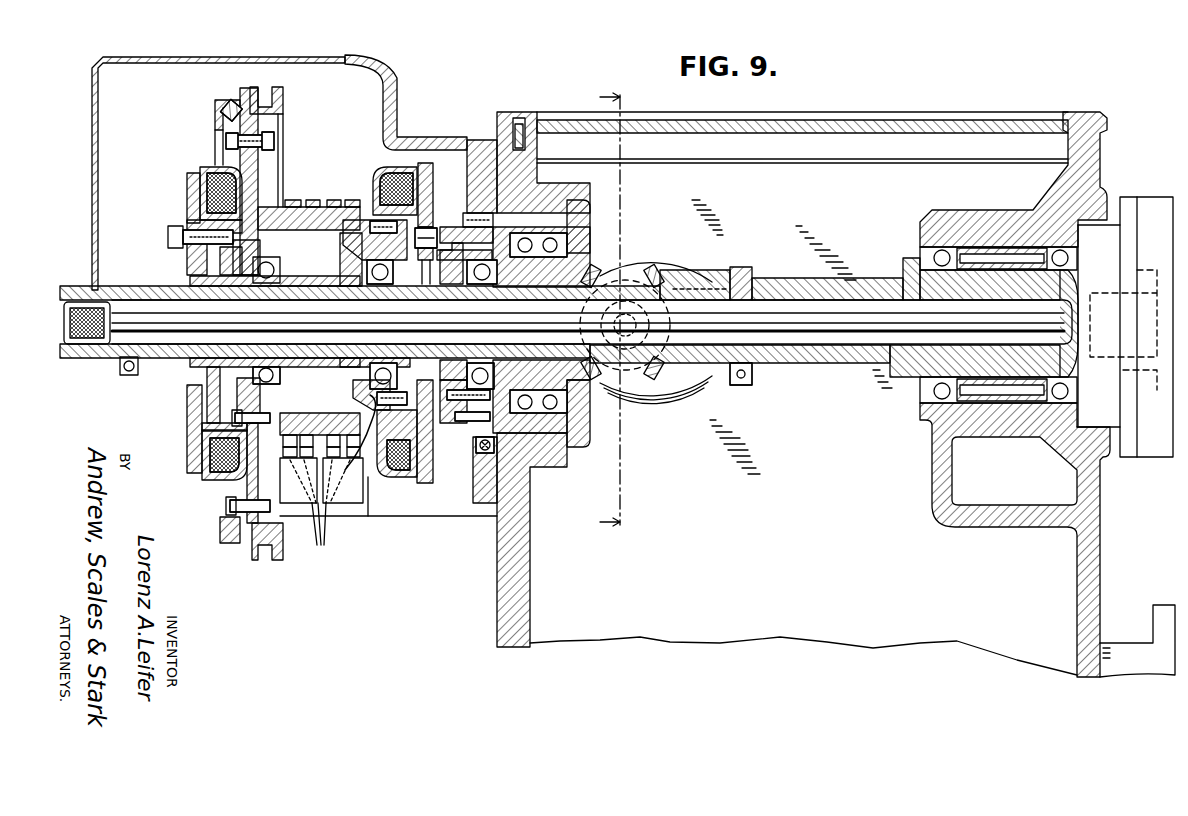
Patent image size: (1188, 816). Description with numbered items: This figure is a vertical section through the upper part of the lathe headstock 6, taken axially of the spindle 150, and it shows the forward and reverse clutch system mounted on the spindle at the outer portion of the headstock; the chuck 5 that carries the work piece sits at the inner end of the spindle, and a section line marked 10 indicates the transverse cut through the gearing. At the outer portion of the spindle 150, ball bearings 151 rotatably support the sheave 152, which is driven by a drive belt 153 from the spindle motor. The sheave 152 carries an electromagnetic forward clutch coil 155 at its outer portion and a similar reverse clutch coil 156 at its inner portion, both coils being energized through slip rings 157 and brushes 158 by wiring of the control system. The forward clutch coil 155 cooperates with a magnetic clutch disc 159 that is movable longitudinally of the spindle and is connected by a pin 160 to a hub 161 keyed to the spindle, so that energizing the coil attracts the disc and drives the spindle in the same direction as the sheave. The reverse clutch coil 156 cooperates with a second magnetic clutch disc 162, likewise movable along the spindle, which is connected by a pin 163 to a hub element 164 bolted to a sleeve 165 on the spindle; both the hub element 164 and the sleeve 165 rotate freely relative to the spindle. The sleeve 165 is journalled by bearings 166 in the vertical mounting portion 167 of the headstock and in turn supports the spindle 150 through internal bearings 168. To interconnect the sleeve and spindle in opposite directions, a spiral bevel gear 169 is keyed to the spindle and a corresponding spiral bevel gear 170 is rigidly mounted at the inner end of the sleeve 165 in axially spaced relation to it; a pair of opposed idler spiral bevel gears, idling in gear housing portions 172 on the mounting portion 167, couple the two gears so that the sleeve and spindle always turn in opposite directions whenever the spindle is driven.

The chuck 5 is at (1149, 200).
The headstock 6 is at (1103, 527).
The section line 10 is at (615, 315).
The spindle 150 is at (840, 373).
The ball bearings 151 is at (365, 268).
The sheave 152 is at (215, 107).
The drive belt 153 is at (236, 98).
The forward clutch coil 155 is at (199, 191).
The reverse clutch coil 156 is at (393, 174).
The slip rings 157 is at (352, 200).
The brushes 158 is at (338, 427).
The magnetic clutch disc 159 is at (188, 209).
The pin 160 is at (197, 240).
The hub 161 is at (235, 253).
The magnetic clutch disc 162 is at (432, 198).
The pin 163 is at (427, 234).
The hub element 164 is at (455, 422).
The sleeve 165 is at (532, 295).
The bearings 166 is at (558, 233).
The vertical mounting portion 167 is at (598, 214).
The internal bearings 168 is at (462, 296).
The spiral bevel gear 169 is at (667, 380).
The spiral bevel gear 170 is at (635, 272).
The gear housing portions 172 is at (643, 270).